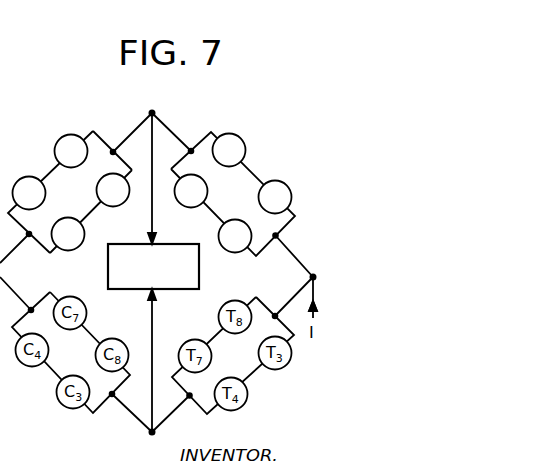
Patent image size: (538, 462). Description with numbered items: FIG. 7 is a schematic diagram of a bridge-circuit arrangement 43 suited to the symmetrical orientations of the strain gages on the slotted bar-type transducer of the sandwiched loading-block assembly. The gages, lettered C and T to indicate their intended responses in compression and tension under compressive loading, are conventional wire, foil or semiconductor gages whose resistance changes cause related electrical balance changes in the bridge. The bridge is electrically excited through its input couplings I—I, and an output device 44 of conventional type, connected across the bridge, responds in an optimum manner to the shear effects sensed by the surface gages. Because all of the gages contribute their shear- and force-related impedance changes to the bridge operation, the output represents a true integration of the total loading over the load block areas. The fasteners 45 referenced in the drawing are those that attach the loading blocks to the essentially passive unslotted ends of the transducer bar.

The bridge-circuit arrangement 43 is at (240, 117).
The output device 44 is at (162, 291).
The fasteners 45 is at (66, 173).